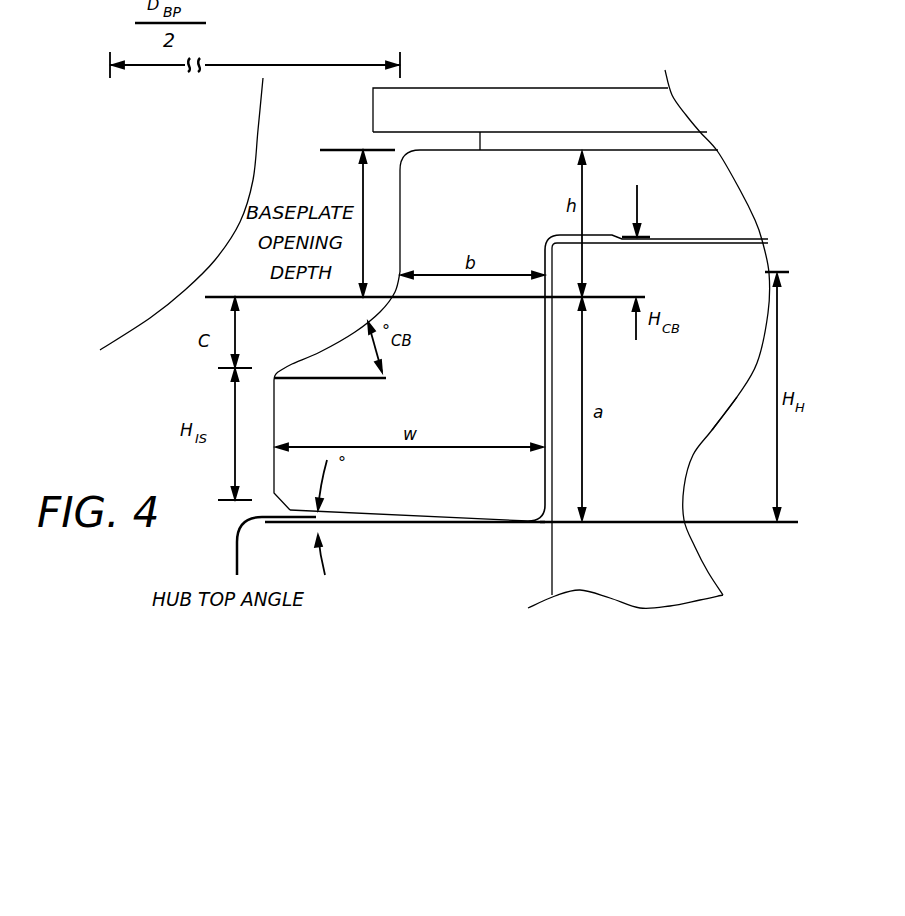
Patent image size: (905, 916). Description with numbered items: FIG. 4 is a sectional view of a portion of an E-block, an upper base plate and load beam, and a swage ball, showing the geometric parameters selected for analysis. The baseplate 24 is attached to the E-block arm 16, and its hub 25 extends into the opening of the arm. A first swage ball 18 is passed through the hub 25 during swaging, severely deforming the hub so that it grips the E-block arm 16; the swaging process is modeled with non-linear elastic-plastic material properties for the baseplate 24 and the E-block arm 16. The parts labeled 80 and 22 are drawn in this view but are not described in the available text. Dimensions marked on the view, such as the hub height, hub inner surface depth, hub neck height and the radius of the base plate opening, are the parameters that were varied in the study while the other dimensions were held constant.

The motor 80 is at (560, 88).
The cover 22 is at (700, 133).
The baseplate 24 is at (739, 188).
The first swage ball 18 is at (258, 178).
The hub 25 is at (324, 348).
The E-block arm 16 is at (691, 536).